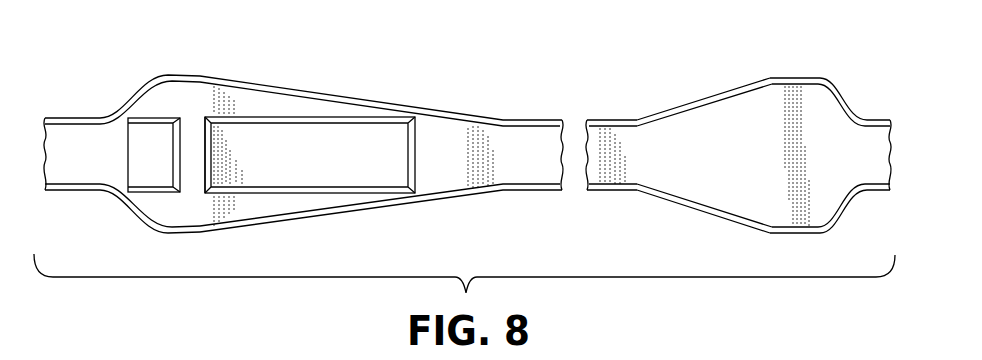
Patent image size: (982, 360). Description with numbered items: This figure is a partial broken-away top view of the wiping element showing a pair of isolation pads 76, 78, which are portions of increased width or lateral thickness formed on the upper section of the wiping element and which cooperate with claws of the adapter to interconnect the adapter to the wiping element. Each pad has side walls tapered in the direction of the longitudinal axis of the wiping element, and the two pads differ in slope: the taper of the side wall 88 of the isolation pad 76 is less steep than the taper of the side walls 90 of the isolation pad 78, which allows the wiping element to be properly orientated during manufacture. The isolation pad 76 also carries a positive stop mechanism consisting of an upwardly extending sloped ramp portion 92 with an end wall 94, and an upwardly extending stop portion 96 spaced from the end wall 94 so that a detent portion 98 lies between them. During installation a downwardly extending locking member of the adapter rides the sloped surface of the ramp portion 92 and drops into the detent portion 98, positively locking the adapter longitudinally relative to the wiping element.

The isolation pad 76 is at (126, 81).
The isolation pad 78 is at (655, 89).
The side wall 88 is at (323, 92).
The side walls 90 is at (715, 95).
The sloped ramp portion 92 is at (310, 155).
The end wall 94 is at (208, 145).
The stop portion 96 is at (147, 160).
The detent portion 98 is at (192, 172).